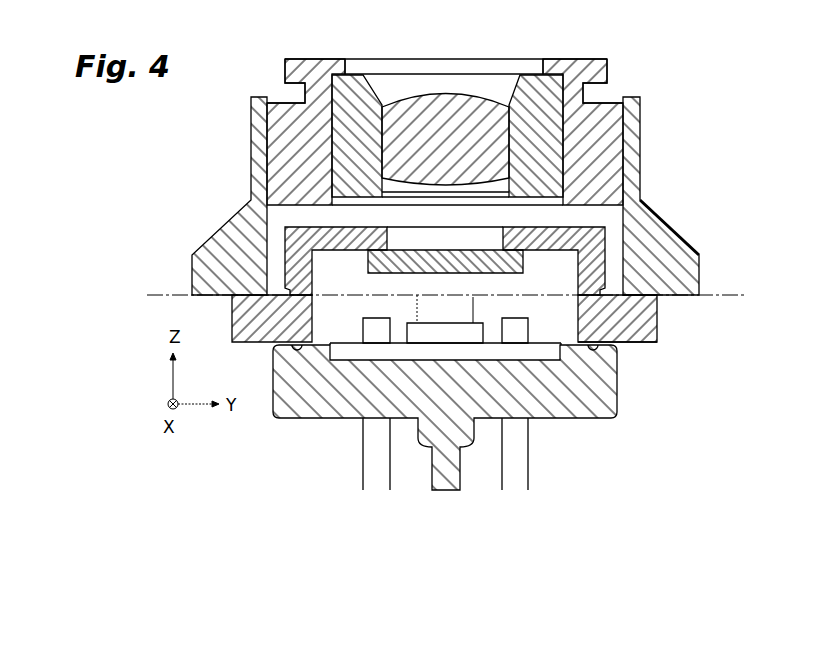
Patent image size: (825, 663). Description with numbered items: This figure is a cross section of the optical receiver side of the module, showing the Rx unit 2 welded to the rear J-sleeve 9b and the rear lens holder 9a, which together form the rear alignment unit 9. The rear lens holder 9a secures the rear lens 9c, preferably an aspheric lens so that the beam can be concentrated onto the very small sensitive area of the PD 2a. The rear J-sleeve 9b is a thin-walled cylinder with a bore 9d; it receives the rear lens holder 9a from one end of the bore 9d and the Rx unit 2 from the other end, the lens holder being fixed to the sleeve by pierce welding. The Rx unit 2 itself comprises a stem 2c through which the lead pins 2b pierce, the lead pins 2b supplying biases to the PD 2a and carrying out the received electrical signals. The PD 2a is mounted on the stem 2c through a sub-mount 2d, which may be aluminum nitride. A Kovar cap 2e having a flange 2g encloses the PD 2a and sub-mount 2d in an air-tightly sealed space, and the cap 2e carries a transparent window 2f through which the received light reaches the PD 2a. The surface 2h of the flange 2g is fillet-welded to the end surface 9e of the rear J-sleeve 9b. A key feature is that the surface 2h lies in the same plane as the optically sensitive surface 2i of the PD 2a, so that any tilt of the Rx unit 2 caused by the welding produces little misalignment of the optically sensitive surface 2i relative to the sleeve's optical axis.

The rear alignment unit 9 is at (767, 65).
The rear lens holder 9a is at (598, 69).
The rear J-sleeve 9b is at (665, 238).
The rear lens 9c is at (473, 97).
The bore 9d is at (608, 218).
The end surface 9e is at (673, 298).
The Rx unit 2 is at (639, 419).
The PD 2a is at (468, 309).
The lead pins 2b is at (373, 482).
The stem 2c is at (572, 410).
The sub-mount 2d is at (418, 327).
The cap 2e is at (657, 343).
The window 2f is at (523, 262).
The flange 2g is at (655, 327).
The surface of the flange 2h is at (643, 295).
The optically sensitive surface 2i is at (453, 293).